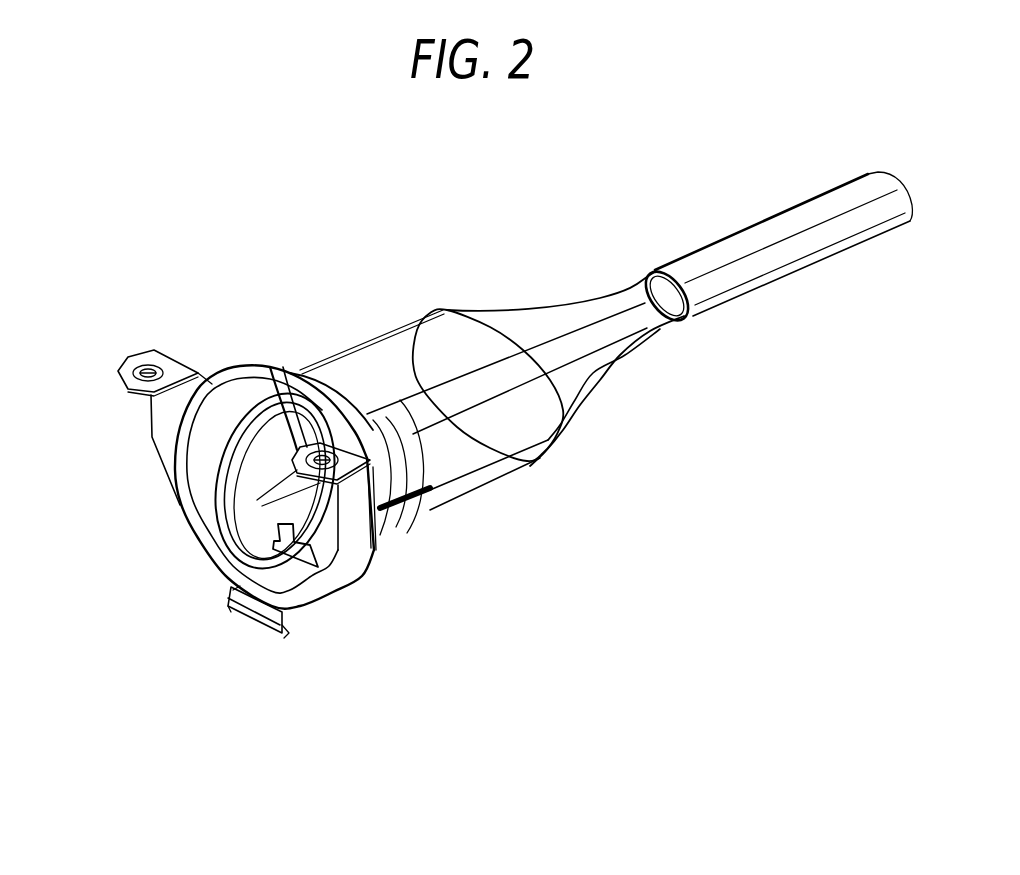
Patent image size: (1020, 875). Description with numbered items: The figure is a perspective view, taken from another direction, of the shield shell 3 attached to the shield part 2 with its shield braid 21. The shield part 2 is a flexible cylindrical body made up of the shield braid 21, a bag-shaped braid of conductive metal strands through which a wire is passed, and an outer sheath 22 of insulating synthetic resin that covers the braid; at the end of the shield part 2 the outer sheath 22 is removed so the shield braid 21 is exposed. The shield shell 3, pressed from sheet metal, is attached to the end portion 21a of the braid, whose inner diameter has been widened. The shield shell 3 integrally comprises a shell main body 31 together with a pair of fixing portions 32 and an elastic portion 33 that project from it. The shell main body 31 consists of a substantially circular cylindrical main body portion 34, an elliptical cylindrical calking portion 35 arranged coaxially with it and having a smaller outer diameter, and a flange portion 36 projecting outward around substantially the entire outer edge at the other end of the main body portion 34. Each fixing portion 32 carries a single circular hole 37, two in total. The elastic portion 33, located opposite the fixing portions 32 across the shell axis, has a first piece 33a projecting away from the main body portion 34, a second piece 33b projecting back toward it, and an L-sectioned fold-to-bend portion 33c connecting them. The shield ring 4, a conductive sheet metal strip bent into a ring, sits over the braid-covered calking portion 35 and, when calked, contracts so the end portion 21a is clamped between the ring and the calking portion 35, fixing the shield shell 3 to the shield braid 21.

The shield part 2 is at (601, 376).
The shield braid 21 is at (487, 426).
The end portion 21a is at (473, 490).
The outer sheath 22 is at (731, 306).
The shield shell 3 is at (214, 487).
The shell main body 31 is at (226, 360).
The fixing portion 32 is at (117, 370).
The elastic portion 33 is at (220, 661).
The first piece 33a is at (230, 592).
The second piece 33b is at (273, 634).
The fold-to-bend portion 33c is at (237, 617).
The main body portion 34 is at (268, 372).
The calking portion 35 is at (273, 440).
The flange portion 36 is at (160, 428).
The one hole 37 is at (140, 372).
The shield ring 4 is at (400, 533).